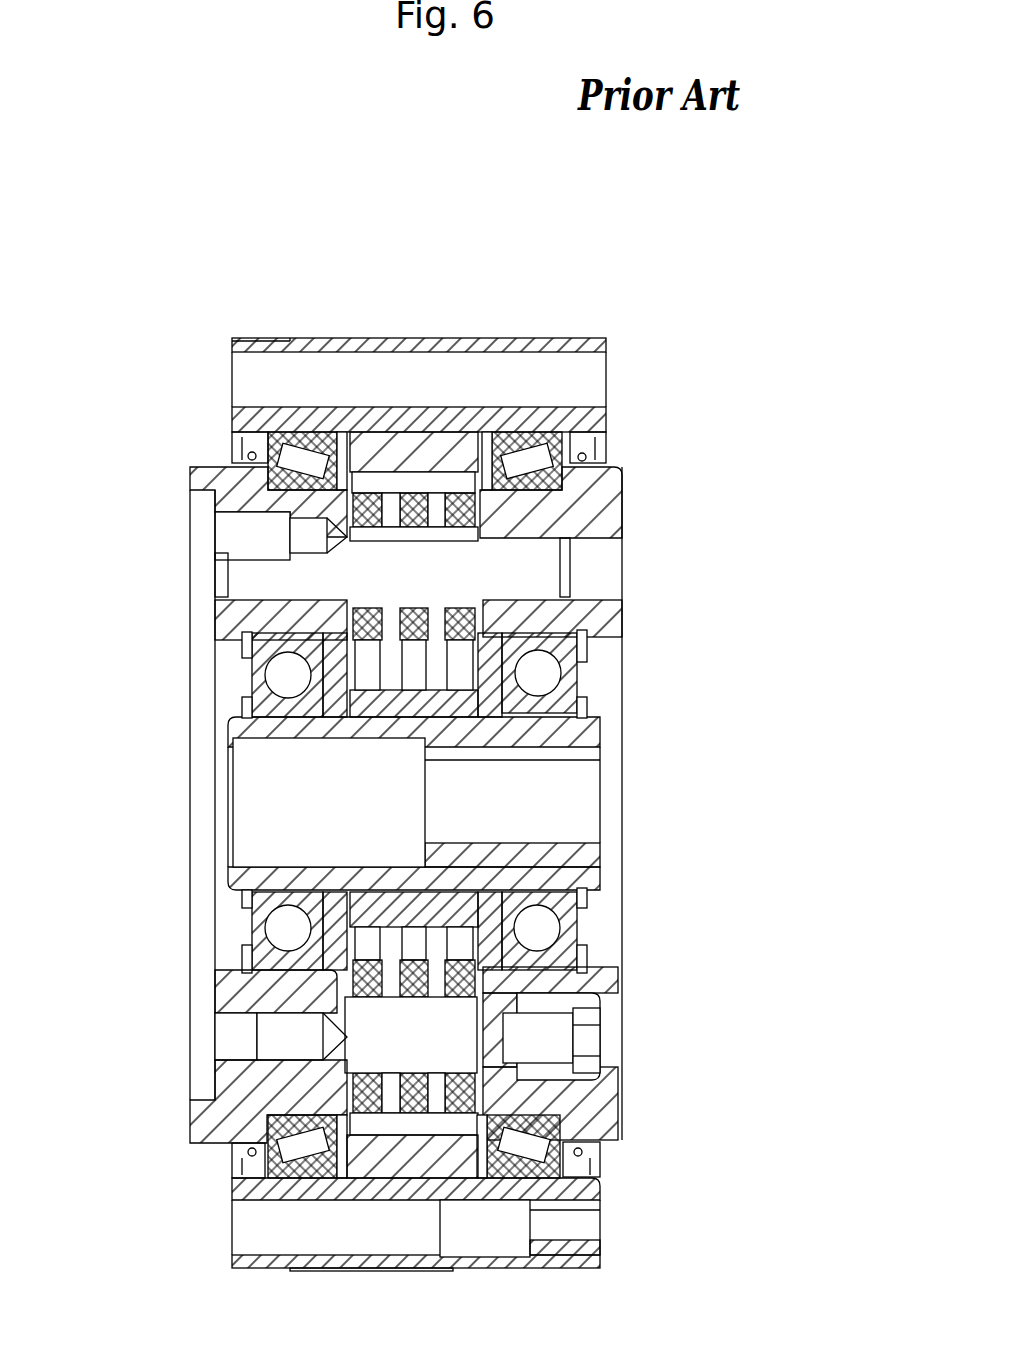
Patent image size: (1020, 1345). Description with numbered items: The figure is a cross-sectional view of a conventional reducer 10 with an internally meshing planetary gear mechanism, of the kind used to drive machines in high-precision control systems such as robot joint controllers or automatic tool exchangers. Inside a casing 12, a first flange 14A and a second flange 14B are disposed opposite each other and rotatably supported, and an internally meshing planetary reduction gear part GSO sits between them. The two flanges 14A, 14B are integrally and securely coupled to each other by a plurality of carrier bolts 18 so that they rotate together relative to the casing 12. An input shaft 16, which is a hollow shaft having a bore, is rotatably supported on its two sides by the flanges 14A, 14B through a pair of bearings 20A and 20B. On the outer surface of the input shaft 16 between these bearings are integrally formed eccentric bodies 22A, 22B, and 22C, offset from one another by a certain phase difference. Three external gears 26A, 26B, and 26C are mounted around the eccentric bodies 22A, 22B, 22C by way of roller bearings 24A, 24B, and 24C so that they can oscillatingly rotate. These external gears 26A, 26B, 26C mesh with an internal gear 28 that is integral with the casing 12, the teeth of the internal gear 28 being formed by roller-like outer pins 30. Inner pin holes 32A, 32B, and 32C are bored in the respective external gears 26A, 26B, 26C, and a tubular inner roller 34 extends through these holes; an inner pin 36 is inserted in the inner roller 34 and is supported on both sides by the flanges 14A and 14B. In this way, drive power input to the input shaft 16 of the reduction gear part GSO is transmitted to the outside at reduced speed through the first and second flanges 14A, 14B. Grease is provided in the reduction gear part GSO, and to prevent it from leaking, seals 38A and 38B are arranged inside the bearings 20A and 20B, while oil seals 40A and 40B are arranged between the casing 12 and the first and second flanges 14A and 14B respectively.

The reducer 10 is at (422, 262).
The internally meshing planetary reduction gear part GSO is at (425, 437).
The casing 12 is at (590, 420).
The oil seal 40A is at (597, 447).
The oil seal 40B is at (235, 438).
The inner pin hole 32A is at (370, 497).
The inner pin hole 32B is at (410, 500).
The inner pin hole 32C is at (453, 495).
The first flange 14A is at (608, 503).
The second flange 14B is at (200, 472).
The inner roller 34 is at (465, 533).
The inner pin 36 is at (545, 565).
The roller bearing 24A is at (370, 607).
The roller bearing 24B is at (407, 613).
The roller bearing 24C is at (458, 613).
The bearing 20A is at (578, 652).
The bearing 20B is at (255, 675).
The input shaft 16 is at (583, 733).
The eccentric body 22A is at (362, 697).
The eccentric body 22B is at (408, 697).
The eccentric body 22C is at (460, 690).
The seal 38A is at (575, 927).
The seal 38B is at (262, 940).
The external gear 26A is at (362, 1073).
The external gear 26B is at (410, 1070).
The external gear 26C is at (443, 1062).
The carrier bolt 18 is at (555, 1037).
The outer pin 30 is at (372, 1125).
The internal gear 28 is at (463, 1143).